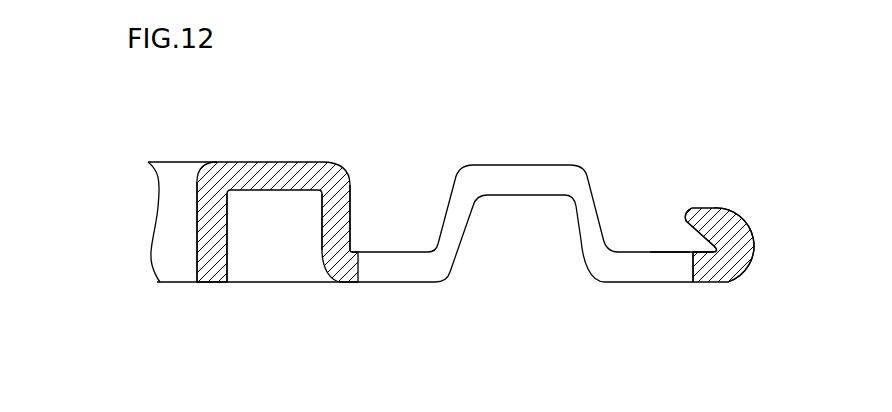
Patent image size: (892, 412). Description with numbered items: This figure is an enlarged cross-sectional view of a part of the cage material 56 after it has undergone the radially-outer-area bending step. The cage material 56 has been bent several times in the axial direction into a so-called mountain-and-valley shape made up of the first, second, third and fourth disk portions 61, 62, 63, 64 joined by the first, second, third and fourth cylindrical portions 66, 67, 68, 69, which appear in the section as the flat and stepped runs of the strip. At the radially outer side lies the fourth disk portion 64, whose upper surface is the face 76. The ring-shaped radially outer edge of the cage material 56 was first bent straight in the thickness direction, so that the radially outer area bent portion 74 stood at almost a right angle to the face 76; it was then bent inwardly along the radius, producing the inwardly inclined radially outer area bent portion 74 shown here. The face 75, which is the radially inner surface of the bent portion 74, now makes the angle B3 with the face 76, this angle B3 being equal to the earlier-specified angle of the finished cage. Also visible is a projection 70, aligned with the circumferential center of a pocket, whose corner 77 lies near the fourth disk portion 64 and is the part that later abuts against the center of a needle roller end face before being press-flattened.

The cage material 56 is at (732, 125).
The first disk portion 61 is at (273, 177).
The second disk portion 62 is at (390, 268).
The third disk portion 63 is at (522, 180).
The fourth disk portion 64 is at (635, 268).
The first cylindrical portion 66 is at (208, 239).
The second cylindrical portion 67 is at (334, 217).
The third cylindrical portion 68 is at (458, 214).
The fourth cylindrical portion 69 is at (587, 218).
The projection 70 is at (691, 212).
The radially outer area bent portion 74 is at (713, 224).
The face 75 is at (685, 233).
The face 76 is at (668, 252).
The corner 77 is at (688, 218).
The angle B3 is at (692, 250).